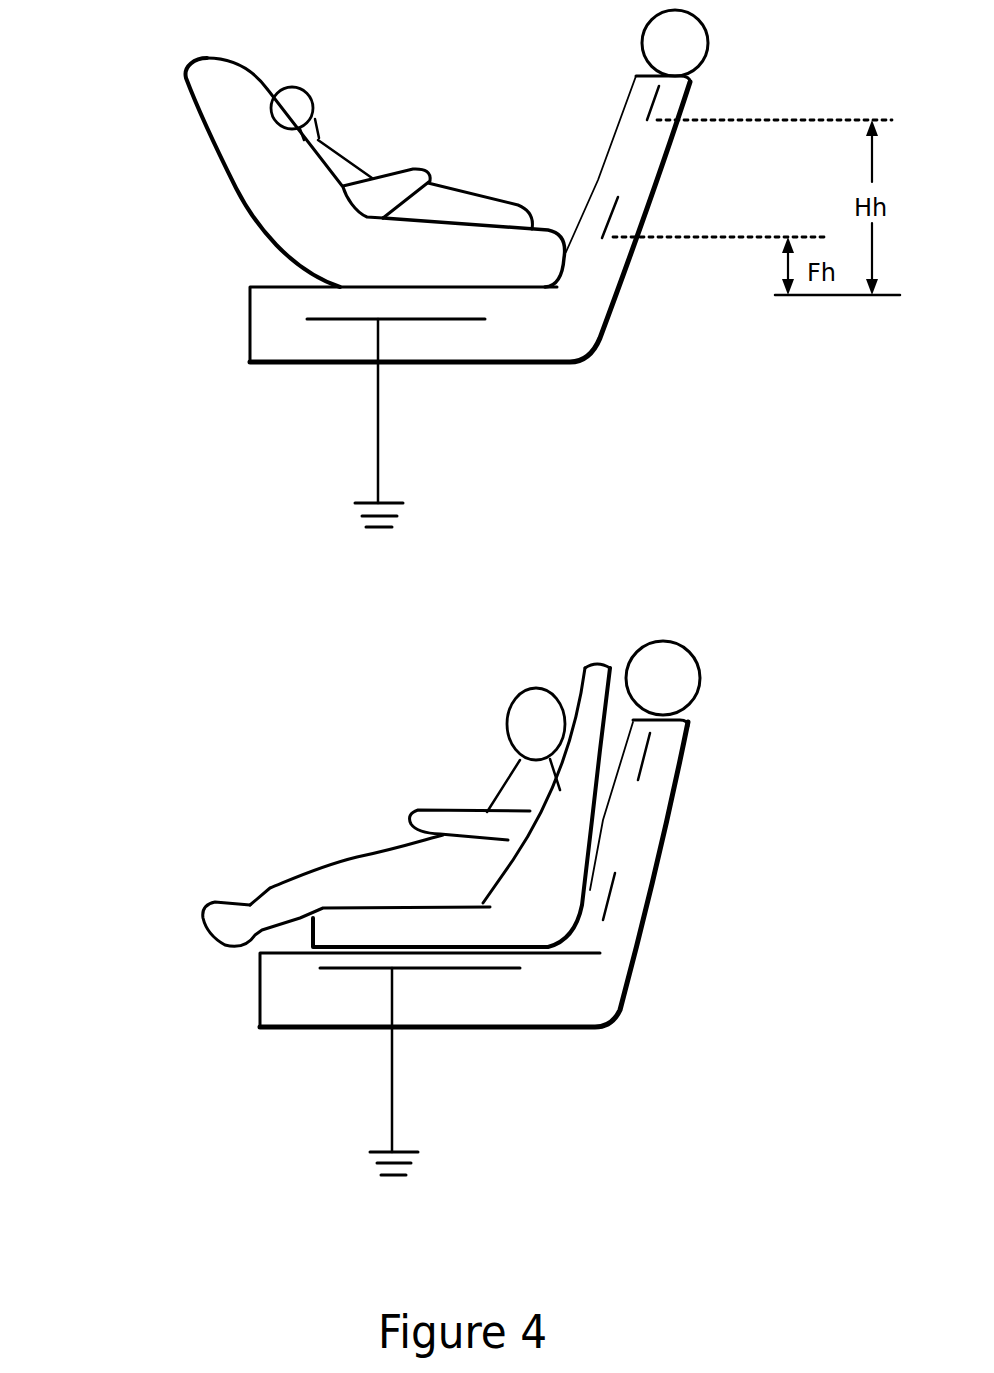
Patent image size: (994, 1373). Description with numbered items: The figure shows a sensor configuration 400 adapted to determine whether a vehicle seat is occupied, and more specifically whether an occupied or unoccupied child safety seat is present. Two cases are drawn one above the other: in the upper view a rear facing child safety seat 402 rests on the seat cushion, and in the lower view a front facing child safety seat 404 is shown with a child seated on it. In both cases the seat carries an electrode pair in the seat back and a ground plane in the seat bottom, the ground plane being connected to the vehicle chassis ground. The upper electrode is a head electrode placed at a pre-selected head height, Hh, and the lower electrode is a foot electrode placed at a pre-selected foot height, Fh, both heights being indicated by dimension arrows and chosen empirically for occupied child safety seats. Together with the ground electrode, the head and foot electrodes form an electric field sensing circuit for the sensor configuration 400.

The sensor configuration 400 is at (136, 1186).
The rear facing child safety seat 402 is at (384, 259).
The front facing child safety seat 404 is at (548, 930).